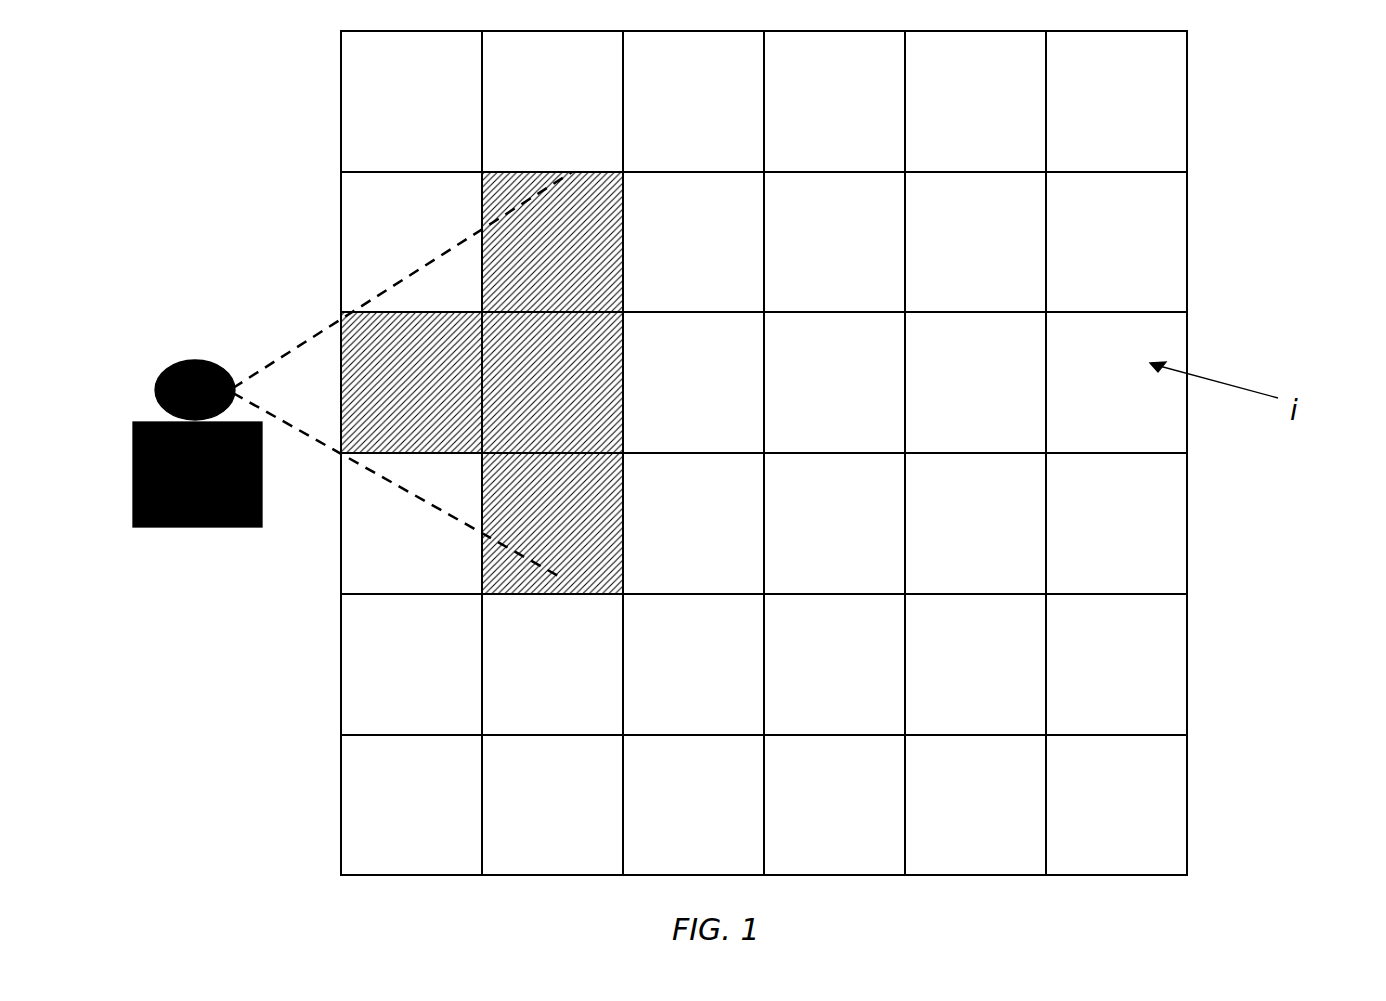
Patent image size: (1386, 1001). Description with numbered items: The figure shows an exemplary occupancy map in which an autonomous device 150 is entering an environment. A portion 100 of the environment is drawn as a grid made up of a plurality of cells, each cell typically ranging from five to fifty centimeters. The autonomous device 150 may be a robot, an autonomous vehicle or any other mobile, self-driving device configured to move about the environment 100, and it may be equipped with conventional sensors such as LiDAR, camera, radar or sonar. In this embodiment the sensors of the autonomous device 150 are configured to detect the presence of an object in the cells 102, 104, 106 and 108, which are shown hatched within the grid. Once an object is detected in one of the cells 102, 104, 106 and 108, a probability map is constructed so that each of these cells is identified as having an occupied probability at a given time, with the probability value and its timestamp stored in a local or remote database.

The portion of the environment 100 is at (1232, 190).
The cell 102 is at (411, 382).
The cell 104 is at (552, 242).
The cell 106 is at (552, 382).
The cell 108 is at (552, 523).
The autonomous device 150 is at (176, 365).